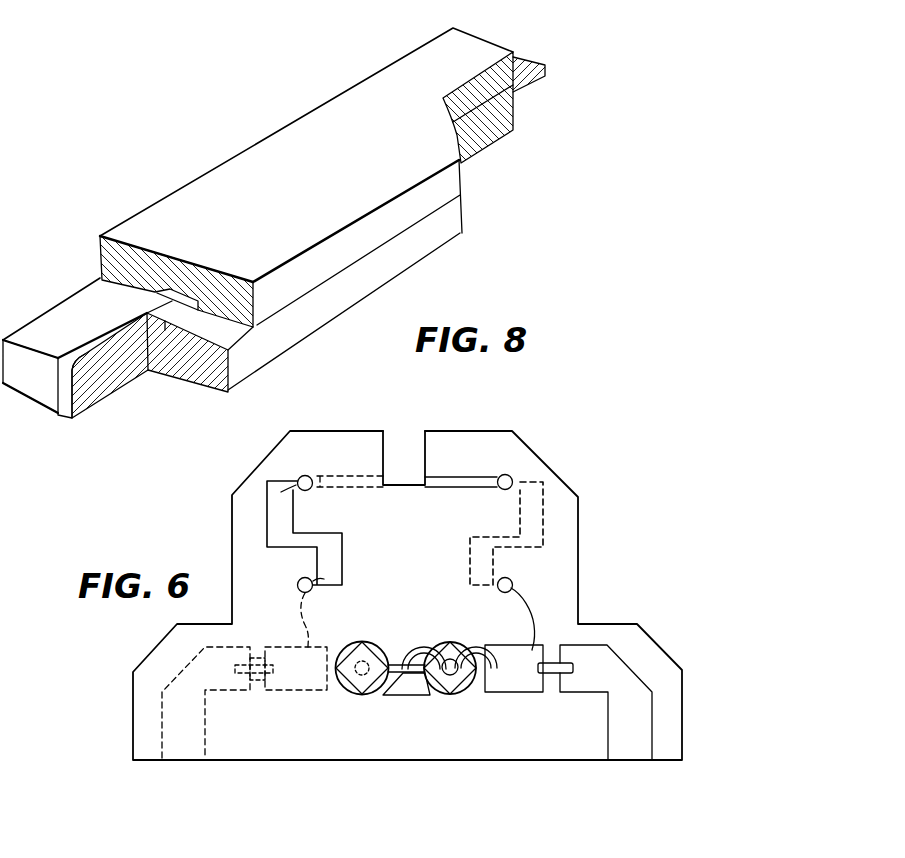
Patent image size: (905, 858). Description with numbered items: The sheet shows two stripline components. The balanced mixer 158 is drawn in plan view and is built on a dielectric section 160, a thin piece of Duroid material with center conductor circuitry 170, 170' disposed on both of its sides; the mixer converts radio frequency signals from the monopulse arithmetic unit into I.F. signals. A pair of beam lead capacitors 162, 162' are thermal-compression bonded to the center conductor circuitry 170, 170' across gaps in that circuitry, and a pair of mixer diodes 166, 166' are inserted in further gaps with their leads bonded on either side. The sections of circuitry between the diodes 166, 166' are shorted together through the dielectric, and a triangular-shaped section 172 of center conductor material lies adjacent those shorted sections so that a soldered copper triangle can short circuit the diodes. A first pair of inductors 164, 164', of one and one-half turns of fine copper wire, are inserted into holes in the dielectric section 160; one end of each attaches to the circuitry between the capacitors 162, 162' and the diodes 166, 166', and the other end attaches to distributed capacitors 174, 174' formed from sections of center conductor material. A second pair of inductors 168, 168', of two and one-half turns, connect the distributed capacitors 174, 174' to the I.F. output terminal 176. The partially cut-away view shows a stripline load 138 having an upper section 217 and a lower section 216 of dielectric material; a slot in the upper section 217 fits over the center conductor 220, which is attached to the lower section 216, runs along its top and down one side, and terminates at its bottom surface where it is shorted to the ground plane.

In FIG. 8, the stripline load 138 is at (175, 184).
In FIG. 8, the upper section 217 is at (101, 253).
In FIG. 8, the center conductor 220 is at (98, 336).
In FIG. 8, the lower section 216 is at (129, 378).
In FIG. 6, the mixer 158 is at (407, 574).
In FIG. 6, the dielectric section 160 is at (577, 568).
In FIG. 6, the I.F. output terminal 176 is at (423, 464).
In FIG. 6, the inductor 168 is at (332, 466).
In FIG. 6, the inductor 168' is at (472, 467).
In FIG. 6, the distributed capacitor 174 is at (335, 533).
In FIG. 6, the distributed capacitor 174' is at (493, 533).
In FIG. 6, the inductor 164 is at (327, 613).
In FIG. 6, the inductor 164' is at (529, 604).
In FIG. 6, the mixer diode 166 is at (381, 653).
In FIG. 6, the mixer diode 166' is at (449, 649).
In FIG. 6, the triangular-shaped section 172 is at (398, 695).
In FIG. 6, the beam lead capacitor 162 is at (278, 685).
In FIG. 6, the beam lead capacitor 162' is at (532, 682).
In FIG. 6, the center conductor circuitry 170 is at (587, 702).
In FIG. 6, the center conductor circuitry 170' is at (228, 702).